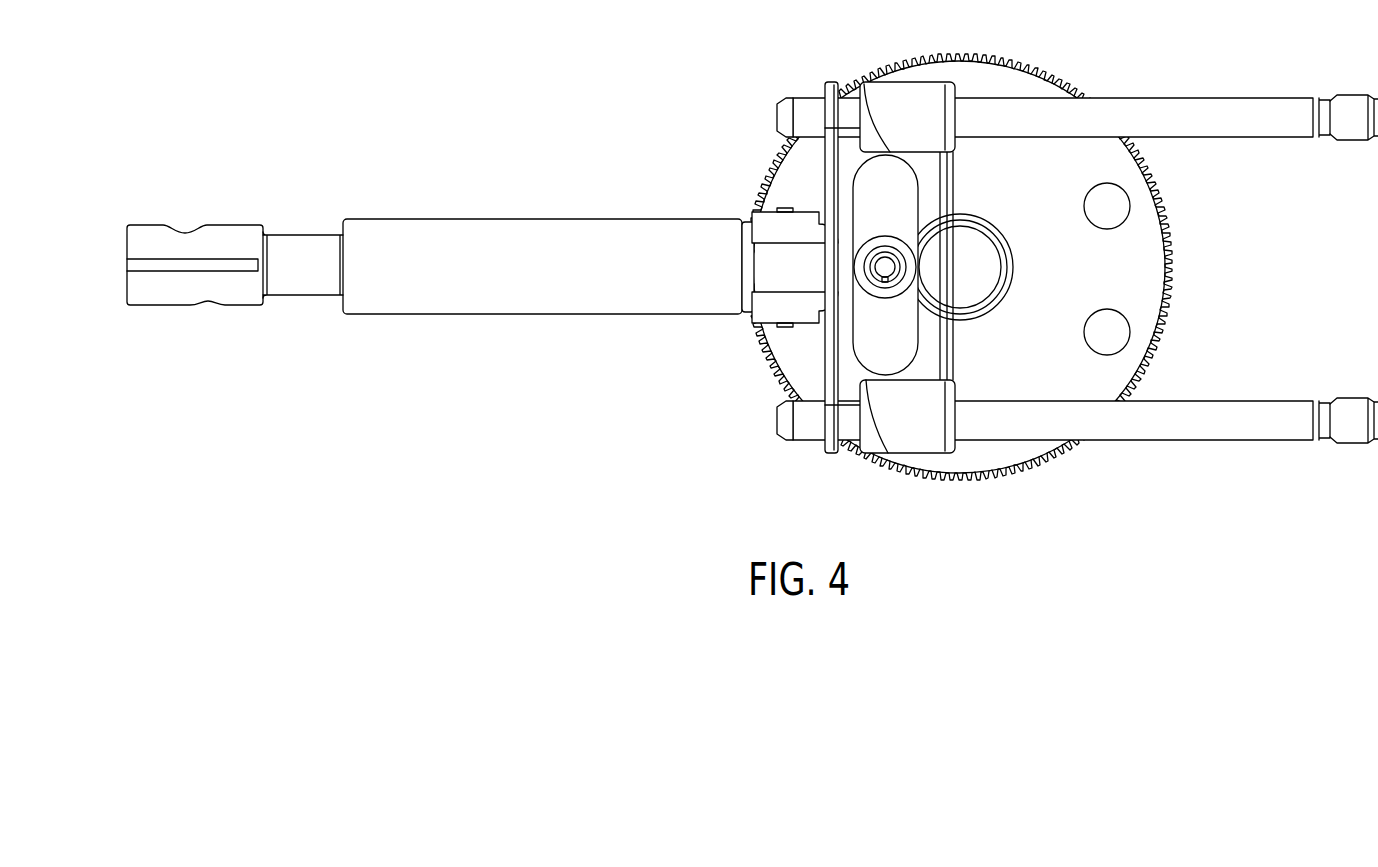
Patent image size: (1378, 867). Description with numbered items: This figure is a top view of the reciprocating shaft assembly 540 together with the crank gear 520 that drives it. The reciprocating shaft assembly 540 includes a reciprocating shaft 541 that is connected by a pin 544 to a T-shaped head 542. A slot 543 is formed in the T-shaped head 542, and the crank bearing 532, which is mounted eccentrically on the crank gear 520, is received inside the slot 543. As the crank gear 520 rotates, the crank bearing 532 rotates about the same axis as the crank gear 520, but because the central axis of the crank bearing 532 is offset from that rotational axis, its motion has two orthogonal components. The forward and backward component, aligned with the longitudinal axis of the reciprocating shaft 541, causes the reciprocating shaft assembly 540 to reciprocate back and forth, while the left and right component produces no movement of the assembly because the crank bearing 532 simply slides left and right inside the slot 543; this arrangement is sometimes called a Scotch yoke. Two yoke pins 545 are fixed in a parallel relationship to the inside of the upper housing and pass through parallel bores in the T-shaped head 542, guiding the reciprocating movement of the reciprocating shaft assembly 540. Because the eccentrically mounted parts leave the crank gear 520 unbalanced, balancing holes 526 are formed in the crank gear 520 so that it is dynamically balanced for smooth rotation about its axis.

The crank gear 520 is at (1043, 462).
The balancing holes 526 is at (1110, 307).
The crank bearing 532 is at (872, 236).
The reciprocating shaft assembly 540 is at (663, 315).
The reciprocating shaft 541 is at (642, 219).
The T-shaped head 542 is at (837, 455).
The slot 543 is at (850, 330).
The pin 544 is at (782, 327).
The yoke pins 545 is at (1218, 98).